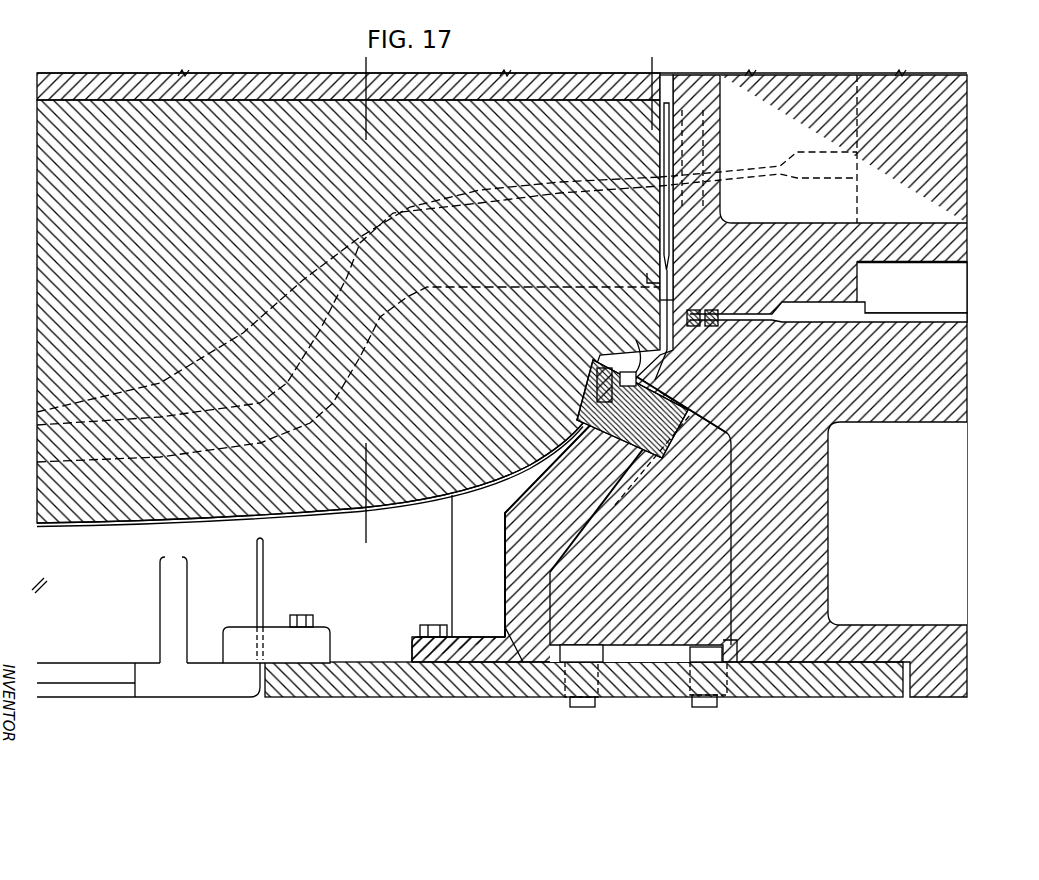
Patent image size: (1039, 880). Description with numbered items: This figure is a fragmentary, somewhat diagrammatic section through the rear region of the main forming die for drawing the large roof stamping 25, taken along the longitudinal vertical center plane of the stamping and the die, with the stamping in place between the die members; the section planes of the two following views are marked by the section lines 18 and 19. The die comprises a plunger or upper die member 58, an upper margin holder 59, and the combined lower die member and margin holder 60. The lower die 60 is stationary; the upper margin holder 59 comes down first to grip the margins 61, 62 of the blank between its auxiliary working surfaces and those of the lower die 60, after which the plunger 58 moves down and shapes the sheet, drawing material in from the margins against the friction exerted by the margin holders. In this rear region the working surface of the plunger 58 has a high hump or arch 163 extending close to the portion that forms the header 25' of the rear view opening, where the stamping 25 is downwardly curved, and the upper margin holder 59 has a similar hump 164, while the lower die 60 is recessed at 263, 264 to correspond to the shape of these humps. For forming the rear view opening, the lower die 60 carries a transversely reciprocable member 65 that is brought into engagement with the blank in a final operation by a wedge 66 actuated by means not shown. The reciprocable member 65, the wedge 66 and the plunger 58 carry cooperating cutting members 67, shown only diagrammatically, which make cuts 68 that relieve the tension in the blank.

The plunger or upper die member 58 is at (40, 104).
The upper margin holder 59 is at (964, 240).
The combined lower die member and margin holder 60 is at (820, 545).
The margin of the blank 61 is at (478, 189).
The margin of the blank 62 is at (745, 172).
The transversely reciprocable member 65 is at (598, 432).
The wedge 66 is at (648, 655).
The cutting members 67 is at (607, 370).
The cuts 68 is at (588, 403).
The hump or arch 163 is at (640, 337).
The hump 164 is at (690, 317).
The recess 263 is at (655, 380).
The recess 264 is at (786, 314).
The main stamping 25 is at (310, 486).
The header of the rear view opening 25' is at (475, 561).
The section line 18- 18 is at (376, 535).
The section line 19- 19 is at (711, 409).